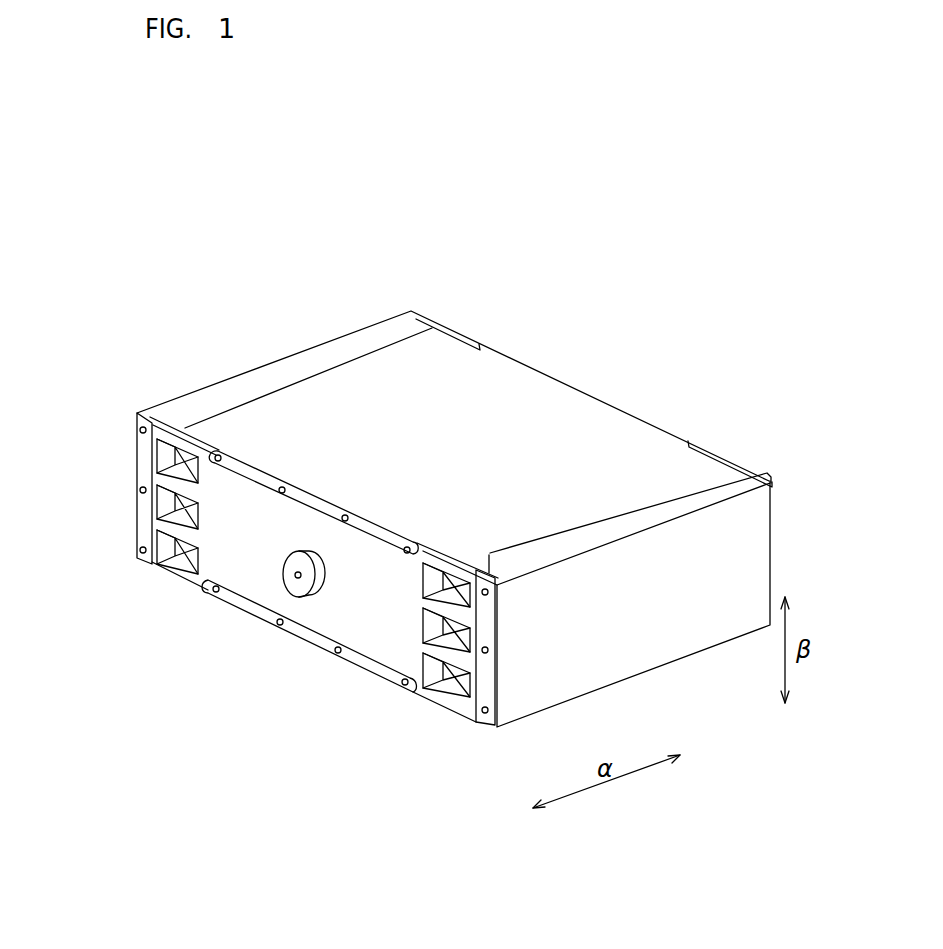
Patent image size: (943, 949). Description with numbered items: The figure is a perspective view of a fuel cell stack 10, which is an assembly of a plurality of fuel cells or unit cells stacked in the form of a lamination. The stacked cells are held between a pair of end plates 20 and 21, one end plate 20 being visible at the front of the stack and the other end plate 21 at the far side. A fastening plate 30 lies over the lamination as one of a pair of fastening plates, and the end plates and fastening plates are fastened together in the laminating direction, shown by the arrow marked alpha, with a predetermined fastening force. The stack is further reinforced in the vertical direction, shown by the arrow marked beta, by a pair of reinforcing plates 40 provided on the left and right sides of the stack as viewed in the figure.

The fuel cell stack 10 is at (135, 408).
The end plate 20 is at (383, 643).
The end plate 21 is at (728, 453).
The fastening plate 30 is at (507, 387).
The reinforcing plate 40 is at (268, 357).